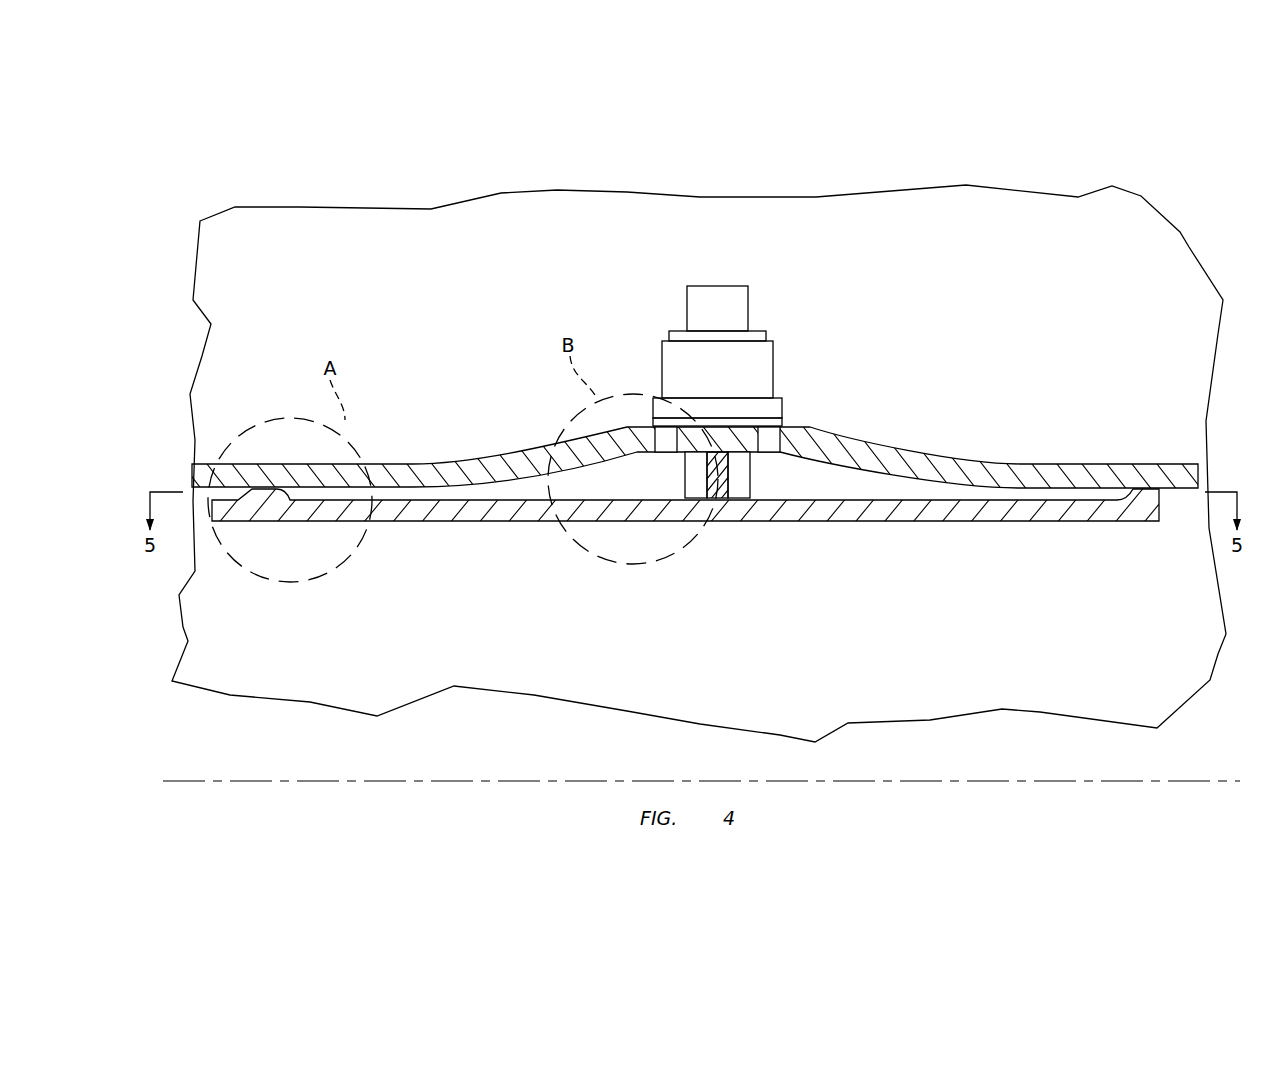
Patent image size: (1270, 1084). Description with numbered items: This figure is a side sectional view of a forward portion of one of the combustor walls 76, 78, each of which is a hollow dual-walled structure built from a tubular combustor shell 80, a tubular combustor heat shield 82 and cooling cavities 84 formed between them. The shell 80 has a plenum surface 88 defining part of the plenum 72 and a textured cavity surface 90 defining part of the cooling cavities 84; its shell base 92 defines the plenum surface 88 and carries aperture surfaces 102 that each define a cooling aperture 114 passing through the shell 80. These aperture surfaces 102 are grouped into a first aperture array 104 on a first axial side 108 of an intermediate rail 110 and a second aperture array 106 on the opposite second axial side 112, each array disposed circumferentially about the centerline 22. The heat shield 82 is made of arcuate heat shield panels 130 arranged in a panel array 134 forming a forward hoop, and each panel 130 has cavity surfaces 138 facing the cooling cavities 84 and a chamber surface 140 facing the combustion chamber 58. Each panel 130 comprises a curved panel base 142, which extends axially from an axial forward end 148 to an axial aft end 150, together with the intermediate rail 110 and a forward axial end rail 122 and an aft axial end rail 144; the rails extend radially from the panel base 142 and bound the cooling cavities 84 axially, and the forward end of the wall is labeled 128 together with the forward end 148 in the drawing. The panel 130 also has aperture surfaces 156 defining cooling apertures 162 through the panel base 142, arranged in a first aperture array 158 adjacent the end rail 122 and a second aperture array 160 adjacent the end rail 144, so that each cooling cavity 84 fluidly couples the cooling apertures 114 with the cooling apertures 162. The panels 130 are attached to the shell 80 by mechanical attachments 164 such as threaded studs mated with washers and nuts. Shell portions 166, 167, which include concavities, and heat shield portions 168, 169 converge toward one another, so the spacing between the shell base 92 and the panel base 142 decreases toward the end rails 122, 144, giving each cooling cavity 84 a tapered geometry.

The centerline 22 is at (943, 781).
The combustion chamber 58 is at (1053, 692).
The plenum 72 is at (1090, 278).
The inner wall 76 is at (1080, 186).
The outer wall 78 is at (1080, 186).
The combustor shell 80 is at (1167, 460).
The combustor heat shield 82 is at (990, 528).
The cooling cavities 84 is at (505, 487).
The plenum surface 88 is at (398, 468).
The cavity surface 90 is at (397, 500).
The shell base 92 is at (393, 478).
The aperture surfaces 102 is at (670, 420).
The first aperture array 104 is at (663, 432).
The second aperture array 106 is at (763, 418).
The first axial side 108 is at (700, 481).
The axial intermediate rail 110 is at (717, 490).
The second axial side 112 is at (738, 500).
The cooling apertures 114 is at (662, 433).
The axial end rail 122 is at (272, 492).
The first end of plate 128 is at (201, 478).
The heat shield panels 130 is at (990, 528).
The panel array 134 is at (487, 550).
The cavity surfaces 138 is at (450, 480).
The chamber surface 140 is at (430, 523).
The panel base 142 is at (548, 522).
The axial end rail 144 is at (1170, 500).
The axial forward end 148 is at (201, 478).
The axial aft end 150 is at (1160, 522).
The aperture surfaces 156 is at (283, 512).
The first aperture array 158 is at (272, 542).
The second aperture array 160 is at (1132, 535).
The cooling apertures 162 is at (1120, 497).
The mechanical attachments 164 is at (762, 323).
The shell portion 166 is at (538, 450).
The shell portion 167 is at (975, 458).
The heat shield portion 168 is at (515, 525).
The heat shield portion 169 is at (958, 525).